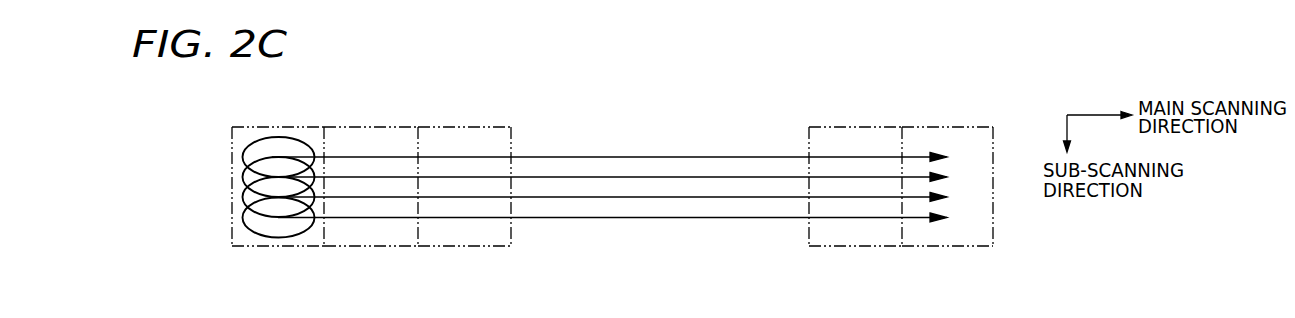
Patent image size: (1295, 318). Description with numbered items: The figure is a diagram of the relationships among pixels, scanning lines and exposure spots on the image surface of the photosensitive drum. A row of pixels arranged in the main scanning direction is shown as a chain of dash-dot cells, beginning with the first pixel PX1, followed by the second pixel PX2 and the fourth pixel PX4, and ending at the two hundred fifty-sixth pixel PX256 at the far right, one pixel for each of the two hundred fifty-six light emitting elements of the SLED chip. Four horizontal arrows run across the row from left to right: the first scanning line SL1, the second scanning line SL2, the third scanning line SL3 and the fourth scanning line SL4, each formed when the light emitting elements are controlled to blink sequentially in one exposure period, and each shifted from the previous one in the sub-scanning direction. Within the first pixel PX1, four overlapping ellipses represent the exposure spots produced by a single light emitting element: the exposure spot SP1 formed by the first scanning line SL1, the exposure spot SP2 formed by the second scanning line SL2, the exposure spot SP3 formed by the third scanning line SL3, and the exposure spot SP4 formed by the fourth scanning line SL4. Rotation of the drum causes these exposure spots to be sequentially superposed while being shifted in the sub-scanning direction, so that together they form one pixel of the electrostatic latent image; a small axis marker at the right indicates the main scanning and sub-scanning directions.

The pixel PX1 is at (288, 127).
The pixel PX2 is at (363, 127).
The pixel PX4 is at (463, 127).
The pixel PX256 is at (955, 127).
The exposure spot SP1 is at (243, 150).
The exposure spot SP2 is at (243, 174).
The exposure spot SP3 is at (243, 198).
The exposure spot SP4 is at (243, 216).
The first scanning line SL1 is at (575, 156).
The second scanning line SL2 is at (633, 176).
The third scanning line SL3 is at (686, 196).
The fourth scanning line SL4 is at (748, 216).